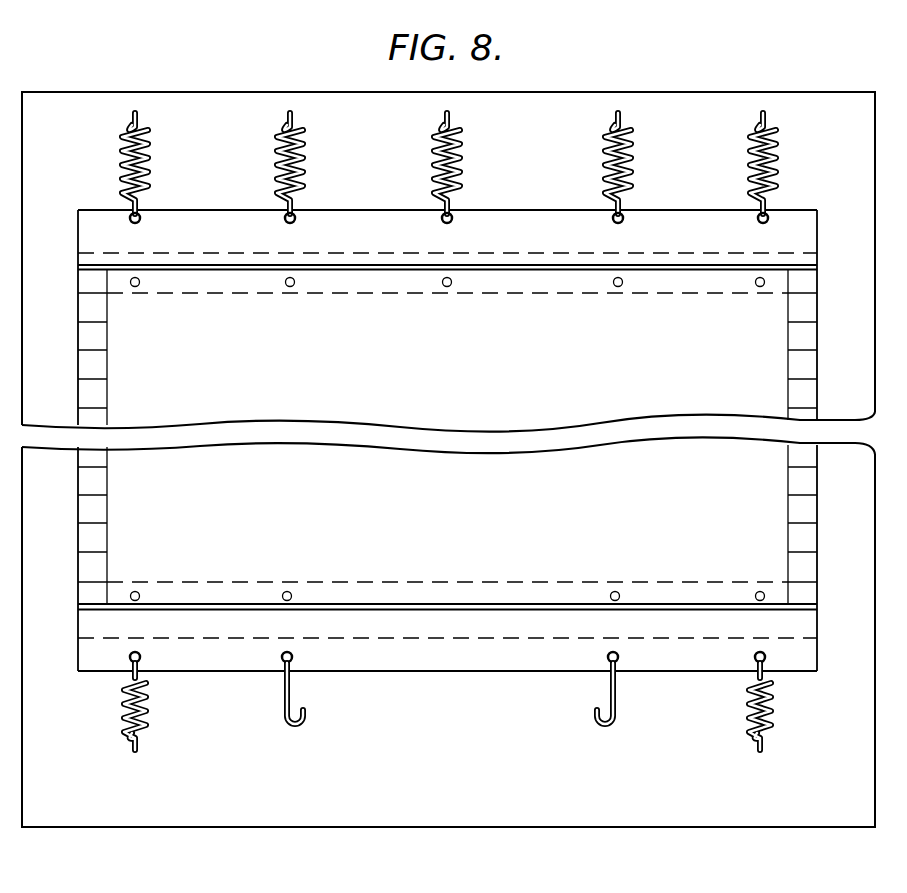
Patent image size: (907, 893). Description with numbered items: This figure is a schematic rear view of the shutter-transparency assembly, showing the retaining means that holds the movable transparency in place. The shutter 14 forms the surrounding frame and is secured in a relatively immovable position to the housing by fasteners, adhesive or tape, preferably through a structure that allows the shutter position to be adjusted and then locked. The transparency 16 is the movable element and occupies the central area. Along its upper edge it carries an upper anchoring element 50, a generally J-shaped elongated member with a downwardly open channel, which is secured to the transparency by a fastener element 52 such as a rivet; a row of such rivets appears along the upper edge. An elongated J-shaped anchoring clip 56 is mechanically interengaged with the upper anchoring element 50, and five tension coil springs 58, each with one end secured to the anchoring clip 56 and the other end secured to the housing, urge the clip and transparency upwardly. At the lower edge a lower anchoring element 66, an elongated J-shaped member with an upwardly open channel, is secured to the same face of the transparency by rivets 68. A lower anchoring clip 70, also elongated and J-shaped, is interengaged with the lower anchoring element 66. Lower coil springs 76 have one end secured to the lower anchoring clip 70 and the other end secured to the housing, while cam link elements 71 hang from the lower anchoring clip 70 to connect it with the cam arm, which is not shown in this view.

The shutter 14 is at (818, 340).
The transparency 16 is at (700, 354).
The upper anchoring element 50 is at (538, 294).
The fastener element 52 is at (447, 287).
The anchoring clip 56 is at (676, 221).
The tension coil spring 58 is at (797, 172).
The lower anchoring element 66 is at (425, 580).
The rivet 68 is at (290, 592).
The lower anchoring clip 70 is at (420, 673).
The cam link element 71 is at (603, 752).
The lower coil spring 76 is at (710, 708).